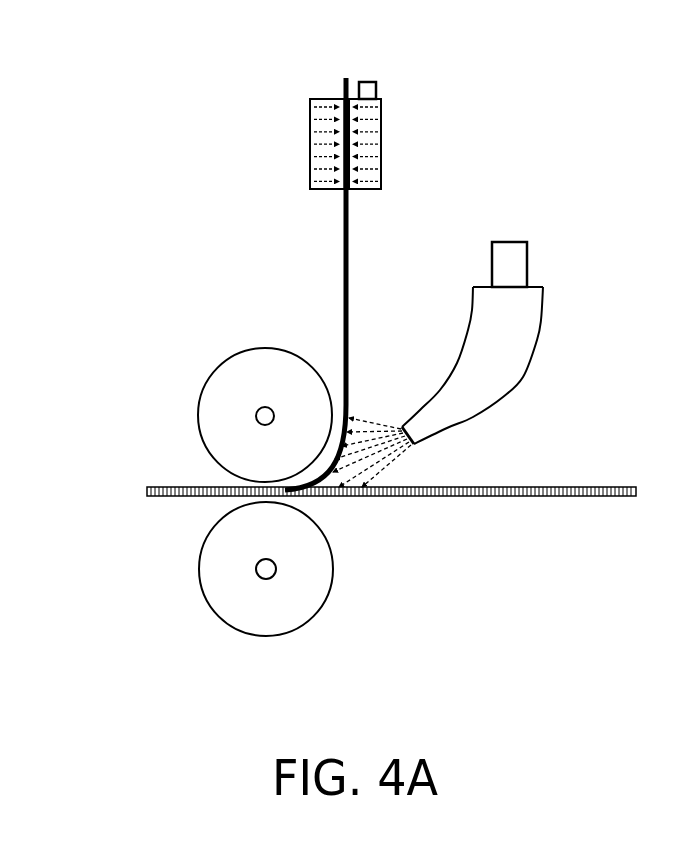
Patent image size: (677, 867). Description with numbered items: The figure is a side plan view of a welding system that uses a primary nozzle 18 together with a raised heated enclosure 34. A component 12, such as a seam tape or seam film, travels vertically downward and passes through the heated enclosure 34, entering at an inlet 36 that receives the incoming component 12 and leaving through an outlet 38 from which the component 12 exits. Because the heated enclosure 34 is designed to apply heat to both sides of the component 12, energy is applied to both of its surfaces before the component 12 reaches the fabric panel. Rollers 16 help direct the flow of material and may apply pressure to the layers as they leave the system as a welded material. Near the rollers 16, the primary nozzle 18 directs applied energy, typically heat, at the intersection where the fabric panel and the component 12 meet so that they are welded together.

The component 12 is at (357, 263).
The rollers 16 is at (228, 410).
The primary nozzle 18 is at (515, 341).
The heated enclosure 34 is at (380, 138).
The inlet 36 is at (345, 100).
The outlet 38 is at (345, 190).